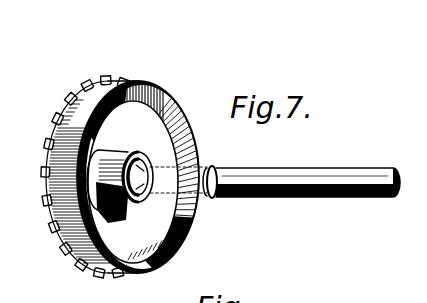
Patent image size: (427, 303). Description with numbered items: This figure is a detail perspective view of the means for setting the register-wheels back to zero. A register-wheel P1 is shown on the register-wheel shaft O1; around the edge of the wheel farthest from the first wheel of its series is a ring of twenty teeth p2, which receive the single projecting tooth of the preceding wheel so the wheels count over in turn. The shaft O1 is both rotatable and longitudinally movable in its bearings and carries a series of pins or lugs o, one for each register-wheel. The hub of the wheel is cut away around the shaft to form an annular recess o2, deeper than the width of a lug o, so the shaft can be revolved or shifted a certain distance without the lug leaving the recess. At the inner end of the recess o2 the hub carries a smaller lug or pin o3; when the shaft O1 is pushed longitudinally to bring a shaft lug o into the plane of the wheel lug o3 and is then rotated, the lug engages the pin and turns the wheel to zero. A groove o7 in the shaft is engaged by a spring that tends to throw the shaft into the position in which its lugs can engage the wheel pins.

The register-wheel P1 is at (148, 90).
The teeth p2 is at (26, 104).
The annular recess o2 is at (139, 156).
The wheel-hub lug or pin o3 is at (150, 180).
The shaft O1 is at (283, 174).
The groove o7 is at (214, 168).
The pins or lugs o is at (318, 194).